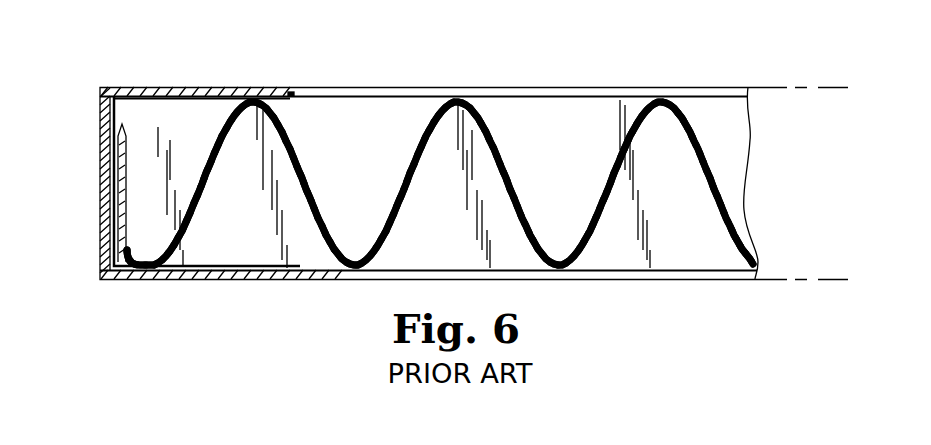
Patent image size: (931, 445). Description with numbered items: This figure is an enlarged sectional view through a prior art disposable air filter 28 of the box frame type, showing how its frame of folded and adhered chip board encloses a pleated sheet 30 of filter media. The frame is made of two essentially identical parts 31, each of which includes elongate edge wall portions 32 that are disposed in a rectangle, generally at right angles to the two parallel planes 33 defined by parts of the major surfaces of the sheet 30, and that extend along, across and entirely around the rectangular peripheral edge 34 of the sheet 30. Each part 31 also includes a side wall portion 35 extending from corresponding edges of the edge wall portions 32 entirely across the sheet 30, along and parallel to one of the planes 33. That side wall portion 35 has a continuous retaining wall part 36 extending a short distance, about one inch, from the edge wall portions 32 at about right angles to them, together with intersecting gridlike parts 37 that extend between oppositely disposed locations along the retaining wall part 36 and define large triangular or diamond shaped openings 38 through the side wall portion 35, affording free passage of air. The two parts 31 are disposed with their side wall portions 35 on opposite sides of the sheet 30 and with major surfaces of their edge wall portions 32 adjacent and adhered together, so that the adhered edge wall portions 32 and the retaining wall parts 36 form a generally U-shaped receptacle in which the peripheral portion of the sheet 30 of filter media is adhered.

The disposable air filter 28 is at (635, 38).
The pleated sheet of filter media 30 is at (710, 167).
The parts of the frame 31 is at (153, 88).
The edge wall portions 32 is at (128, 96).
The parallel planes 33 is at (773, 87).
The peripheral edge 34 is at (122, 147).
The side wall portion 35 is at (310, 88).
The retaining wall part 36 is at (254, 99).
The gridlike parts 37 is at (555, 88).
The openings 38 is at (387, 88).